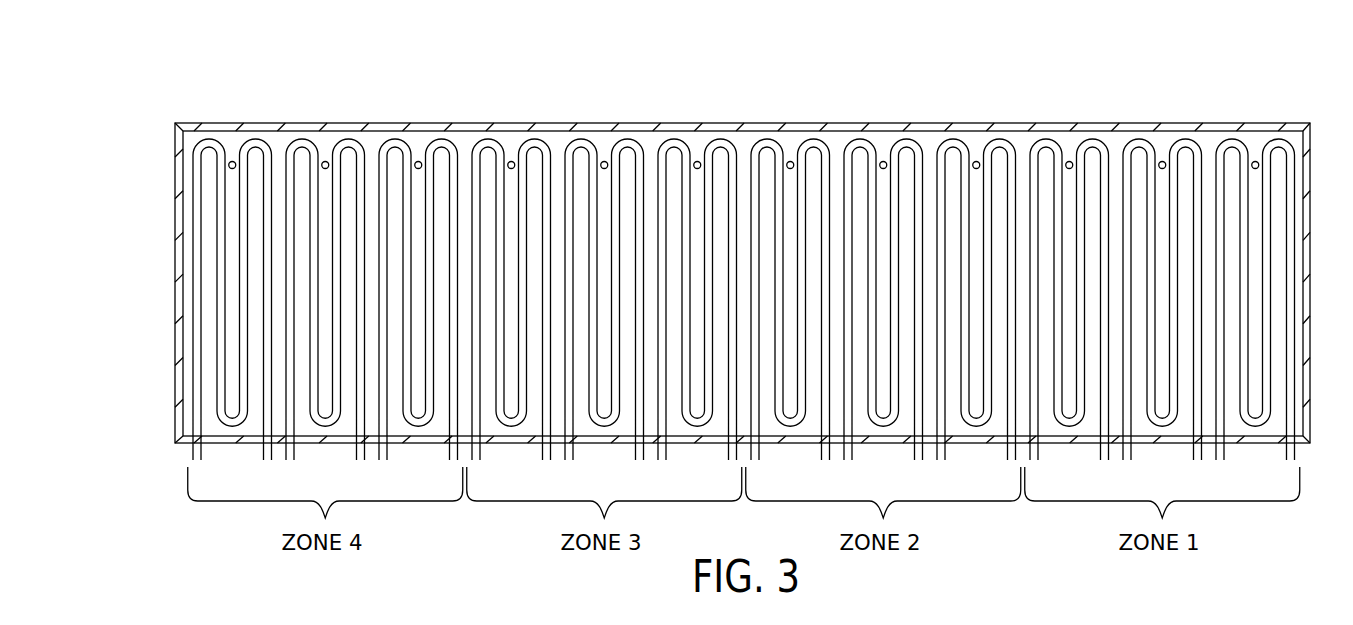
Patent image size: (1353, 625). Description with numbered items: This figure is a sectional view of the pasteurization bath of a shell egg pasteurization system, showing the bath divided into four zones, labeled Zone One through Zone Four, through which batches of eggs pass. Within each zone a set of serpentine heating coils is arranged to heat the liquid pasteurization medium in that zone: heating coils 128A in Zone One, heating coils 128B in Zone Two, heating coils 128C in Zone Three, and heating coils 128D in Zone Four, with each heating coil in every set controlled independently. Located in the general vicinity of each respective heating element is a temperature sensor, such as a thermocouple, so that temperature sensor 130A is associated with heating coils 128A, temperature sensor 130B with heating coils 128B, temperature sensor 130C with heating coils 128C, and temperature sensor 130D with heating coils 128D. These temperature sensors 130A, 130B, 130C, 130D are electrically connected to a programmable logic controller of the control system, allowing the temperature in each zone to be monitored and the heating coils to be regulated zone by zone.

The heating coil 128A is at (1161, 313).
The heating coil 128B is at (882, 313).
The heating coil 128C is at (603, 313).
The heating coil 128D is at (324, 313).
The temperature sensor 130A is at (1155, 110).
The temperature sensor 130B is at (876, 110).
The temperature sensor 130C is at (597, 110).
The temperature sensor 130D is at (318, 110).